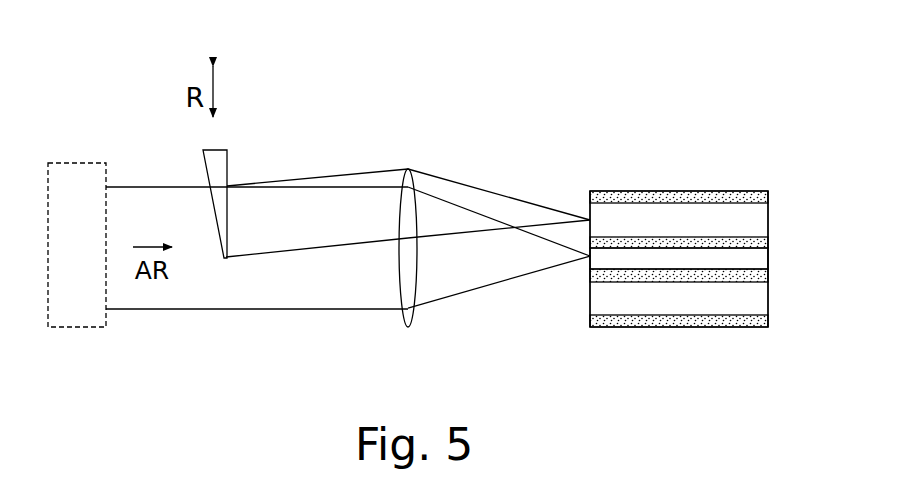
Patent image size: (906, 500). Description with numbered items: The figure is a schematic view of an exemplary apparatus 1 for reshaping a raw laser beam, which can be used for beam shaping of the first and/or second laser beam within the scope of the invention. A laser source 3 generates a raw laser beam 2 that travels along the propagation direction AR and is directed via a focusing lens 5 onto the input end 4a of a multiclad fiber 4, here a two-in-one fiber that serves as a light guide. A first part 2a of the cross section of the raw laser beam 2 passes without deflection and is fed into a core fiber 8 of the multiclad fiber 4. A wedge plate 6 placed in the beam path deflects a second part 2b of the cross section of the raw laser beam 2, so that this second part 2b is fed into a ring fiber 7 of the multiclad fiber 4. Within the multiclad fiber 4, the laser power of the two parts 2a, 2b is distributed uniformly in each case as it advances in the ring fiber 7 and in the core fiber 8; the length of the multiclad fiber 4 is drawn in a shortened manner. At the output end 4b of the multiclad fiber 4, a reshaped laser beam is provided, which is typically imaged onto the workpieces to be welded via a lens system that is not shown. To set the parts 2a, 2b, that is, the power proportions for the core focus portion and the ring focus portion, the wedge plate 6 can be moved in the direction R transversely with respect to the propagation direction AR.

The apparatus 1 is at (461, 106).
The raw laser beam 2 is at (162, 187).
The first part of the cross section of the raw laser beam 2a is at (493, 287).
The second part of the cross section of the raw laser beam 2b is at (355, 176).
The laser source 3 is at (77, 182).
The multiclad fiber 4 is at (667, 228).
The input end 4a is at (591, 186).
The output end 4b is at (769, 186).
The focusing lens 5 is at (406, 330).
The wedge plate 6 is at (232, 157).
The ring fiber 7 is at (717, 222).
The core fiber 8 is at (638, 258).